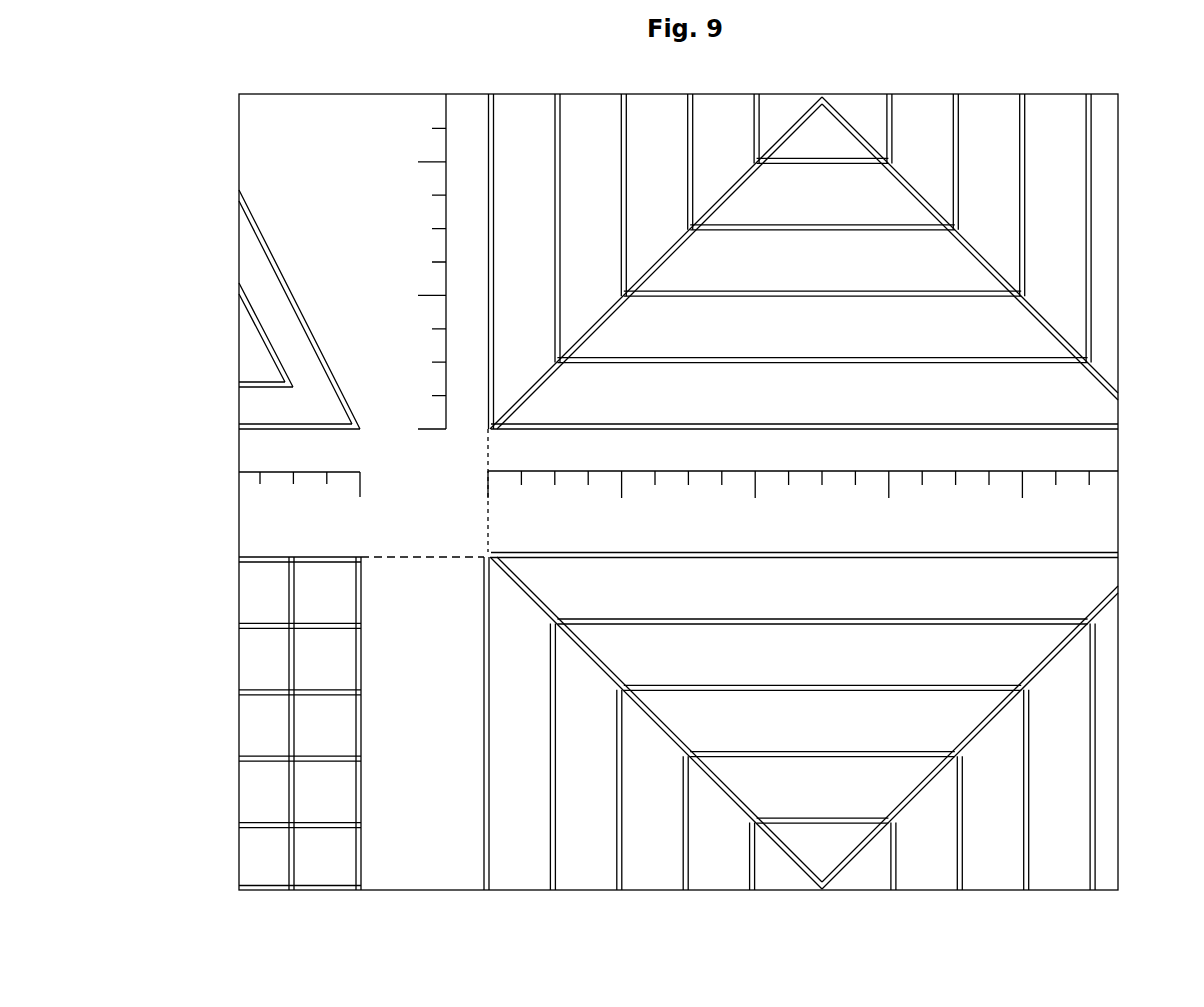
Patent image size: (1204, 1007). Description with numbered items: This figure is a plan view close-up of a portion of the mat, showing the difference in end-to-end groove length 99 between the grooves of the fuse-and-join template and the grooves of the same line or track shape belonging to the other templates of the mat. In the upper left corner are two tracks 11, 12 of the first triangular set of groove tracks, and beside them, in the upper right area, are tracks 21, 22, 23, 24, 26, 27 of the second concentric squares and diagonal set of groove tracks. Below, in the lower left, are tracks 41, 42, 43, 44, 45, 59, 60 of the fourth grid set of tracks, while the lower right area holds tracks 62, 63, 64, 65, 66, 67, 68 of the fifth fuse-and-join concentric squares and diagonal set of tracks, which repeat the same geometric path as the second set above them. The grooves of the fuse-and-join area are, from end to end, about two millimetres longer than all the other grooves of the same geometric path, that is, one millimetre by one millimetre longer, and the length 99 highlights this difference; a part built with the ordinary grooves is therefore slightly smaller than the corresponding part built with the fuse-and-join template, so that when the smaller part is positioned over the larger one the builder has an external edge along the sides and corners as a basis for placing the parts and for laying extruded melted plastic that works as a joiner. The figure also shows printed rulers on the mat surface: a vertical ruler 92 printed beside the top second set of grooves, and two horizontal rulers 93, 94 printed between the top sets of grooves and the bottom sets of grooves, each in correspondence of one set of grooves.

The triangular groove track 11 is at (257, 228).
The triangular groove track 12 is at (250, 297).
The concentric squares and diagonal groove track 21 is at (490, 126).
The concentric squares and diagonal groove track 22 is at (557, 129).
The concentric squares and diagonal groove track 23 is at (624, 133).
The concentric squares and diagonal groove track 24 is at (688, 118).
The concentric squares and diagonal groove track 26 is at (732, 184).
The concentric squares and diagonal groove track 27 is at (907, 180).
The grid groove track 41 is at (306, 559).
The grid groove track 42 is at (310, 625).
The grid groove track 43 is at (313, 692).
The grid groove track 44 is at (312, 757).
The grid groove track 45 is at (310, 825).
The grid groove track 59 is at (290, 858).
The grid groove track 60 is at (358, 846).
The fuse-and-join groove track 62 is at (487, 850).
The fuse-and-join groove track 63 is at (553, 850).
The fuse-and-join groove track 64 is at (618, 850).
The fuse-and-join groove track 65 is at (685, 855).
The fuse-and-join groove track 66 is at (751, 852).
The fuse-and-join groove track 67 is at (660, 732).
The fuse-and-join groove track 68 is at (937, 778).
The vertical printed ruler 92 is at (445, 122).
The horizontal printed ruler 93 is at (1026, 474).
The horizontal printed ruler 94 is at (307, 472).
The groove length 99 is at (484, 551).